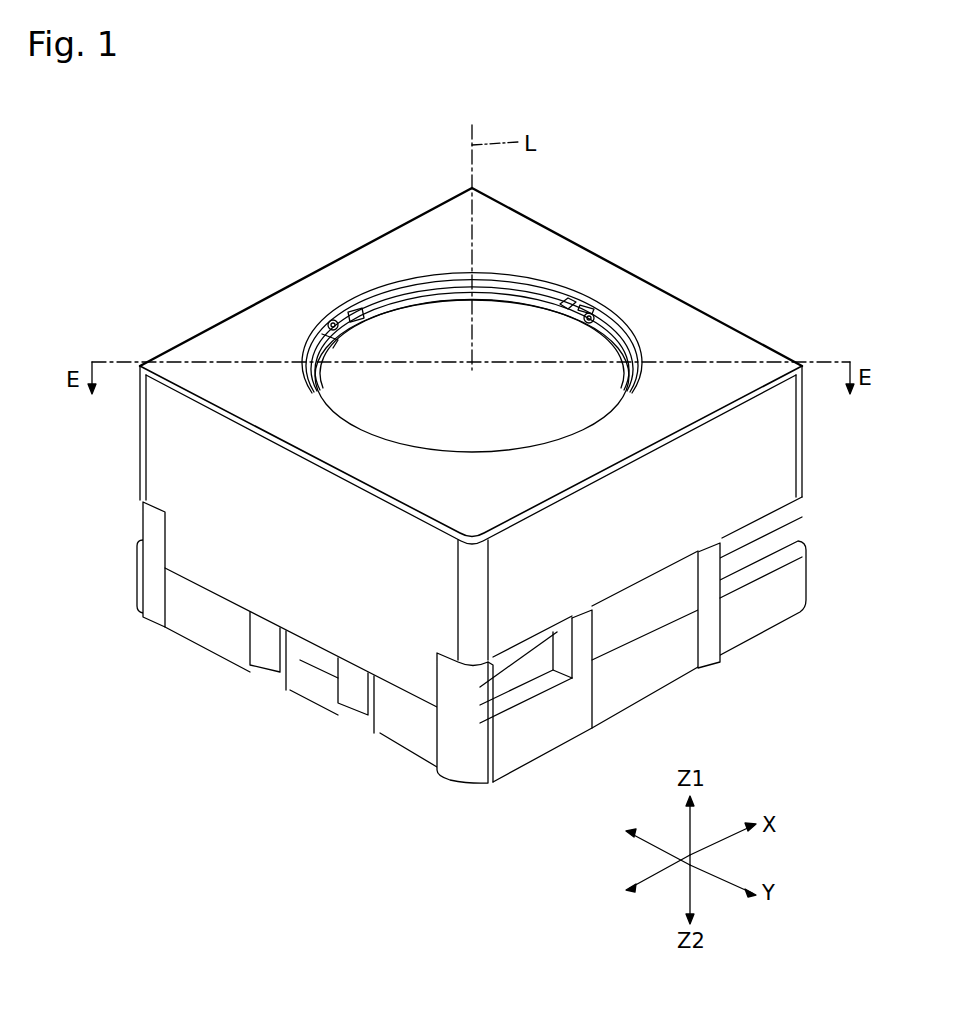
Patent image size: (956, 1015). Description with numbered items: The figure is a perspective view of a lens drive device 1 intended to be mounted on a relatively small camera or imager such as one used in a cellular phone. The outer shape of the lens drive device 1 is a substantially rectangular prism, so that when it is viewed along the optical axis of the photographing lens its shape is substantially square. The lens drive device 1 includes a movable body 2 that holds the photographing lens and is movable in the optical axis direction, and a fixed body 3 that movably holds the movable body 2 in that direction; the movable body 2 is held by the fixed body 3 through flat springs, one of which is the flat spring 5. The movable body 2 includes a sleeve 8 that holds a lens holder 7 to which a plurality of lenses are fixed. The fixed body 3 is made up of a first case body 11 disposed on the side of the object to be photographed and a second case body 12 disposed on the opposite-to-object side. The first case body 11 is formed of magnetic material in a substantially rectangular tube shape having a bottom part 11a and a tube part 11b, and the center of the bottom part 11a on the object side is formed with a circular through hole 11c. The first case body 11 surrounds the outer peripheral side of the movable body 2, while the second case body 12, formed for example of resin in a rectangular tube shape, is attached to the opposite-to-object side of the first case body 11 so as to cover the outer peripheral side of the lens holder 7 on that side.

The lens drive device 1 is at (485, 436).
The movable body 2 is at (483, 302).
The fixed body 3 is at (485, 485).
The flat spring 5 is at (567, 300).
The lens holder 7 is at (343, 318).
The sleeve 8 is at (483, 302).
The first case body 11 is at (472, 424).
The bottom part 11a is at (471, 366).
The tube part 11b is at (157, 448).
The circular through hole 11c is at (444, 452).
The second case body 12 is at (505, 642).